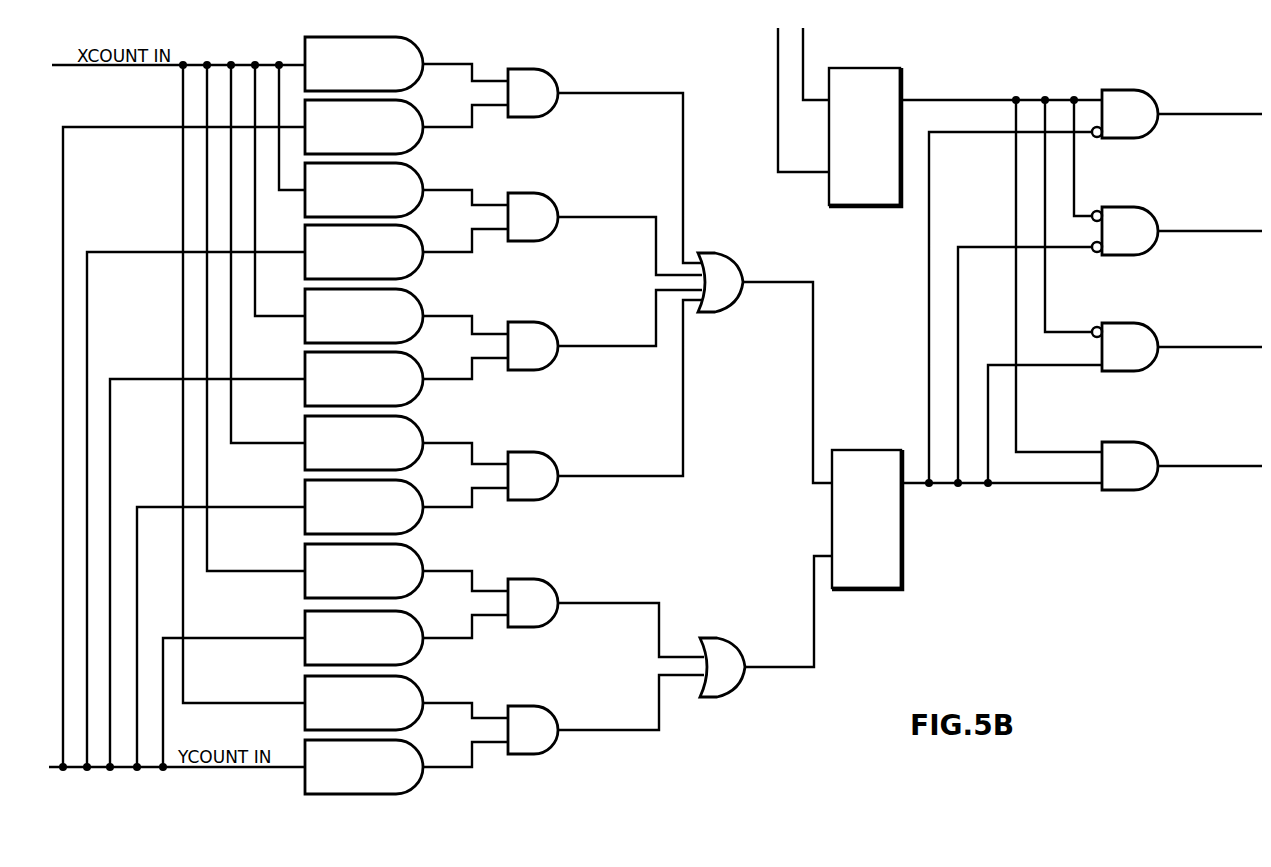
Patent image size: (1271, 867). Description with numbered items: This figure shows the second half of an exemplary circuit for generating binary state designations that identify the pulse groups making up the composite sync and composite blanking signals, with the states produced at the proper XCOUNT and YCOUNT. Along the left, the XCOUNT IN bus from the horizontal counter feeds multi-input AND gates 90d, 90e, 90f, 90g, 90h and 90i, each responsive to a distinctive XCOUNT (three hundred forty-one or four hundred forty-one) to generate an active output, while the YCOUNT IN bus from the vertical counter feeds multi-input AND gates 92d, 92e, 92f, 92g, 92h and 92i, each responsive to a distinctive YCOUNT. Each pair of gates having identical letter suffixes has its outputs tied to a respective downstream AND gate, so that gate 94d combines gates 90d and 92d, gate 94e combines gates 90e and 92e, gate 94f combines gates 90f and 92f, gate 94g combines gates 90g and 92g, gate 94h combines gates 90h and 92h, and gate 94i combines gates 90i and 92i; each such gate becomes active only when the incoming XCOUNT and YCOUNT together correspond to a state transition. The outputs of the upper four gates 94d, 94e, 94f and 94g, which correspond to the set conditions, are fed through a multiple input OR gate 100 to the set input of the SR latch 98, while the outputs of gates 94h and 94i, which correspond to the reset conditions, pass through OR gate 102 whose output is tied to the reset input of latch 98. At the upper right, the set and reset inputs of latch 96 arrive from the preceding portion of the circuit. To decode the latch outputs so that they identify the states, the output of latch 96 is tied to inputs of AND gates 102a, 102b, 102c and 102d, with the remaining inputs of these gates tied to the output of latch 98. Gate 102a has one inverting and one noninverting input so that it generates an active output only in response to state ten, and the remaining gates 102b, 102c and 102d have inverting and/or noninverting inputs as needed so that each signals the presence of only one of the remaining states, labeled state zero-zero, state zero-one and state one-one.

The multi-input AND gate 90d is at (418, 54).
The multi-input AND gate 92d is at (416, 108).
The multi-input AND gate 90e is at (418, 170).
The multi-input AND gate 92e is at (416, 232).
The multi-input AND gate 90f is at (418, 302).
The multi-input AND gate 92f is at (416, 368).
The multi-input AND gate 90g is at (418, 429).
The multi-input AND gate 92g is at (416, 488).
The multi-input AND gate 90h is at (418, 554).
The multi-input AND gate 92h is at (416, 620).
The multi-input AND gate 90i is at (418, 679).
The multi-input AND gate 92i is at (416, 745).
The downstream AND gate 94d is at (541, 69).
The downstream AND gate 94e is at (544, 194).
The downstream AND gate 94f is at (546, 323).
The downstream AND gate 94g is at (548, 453).
The downstream AND gate 94h is at (550, 580).
The downstream AND gate 94i is at (549, 707).
The multiple input OR gate 100 is at (731, 262).
The OR gate 102 is at (729, 646).
The latch 96 is at (902, 92).
The SR latch 98 is at (903, 553).
The AND gate 102a is at (1147, 90).
The AND gate 102b is at (1150, 208).
The AND gate 102c is at (1150, 323).
The AND gate 102d is at (1150, 442).